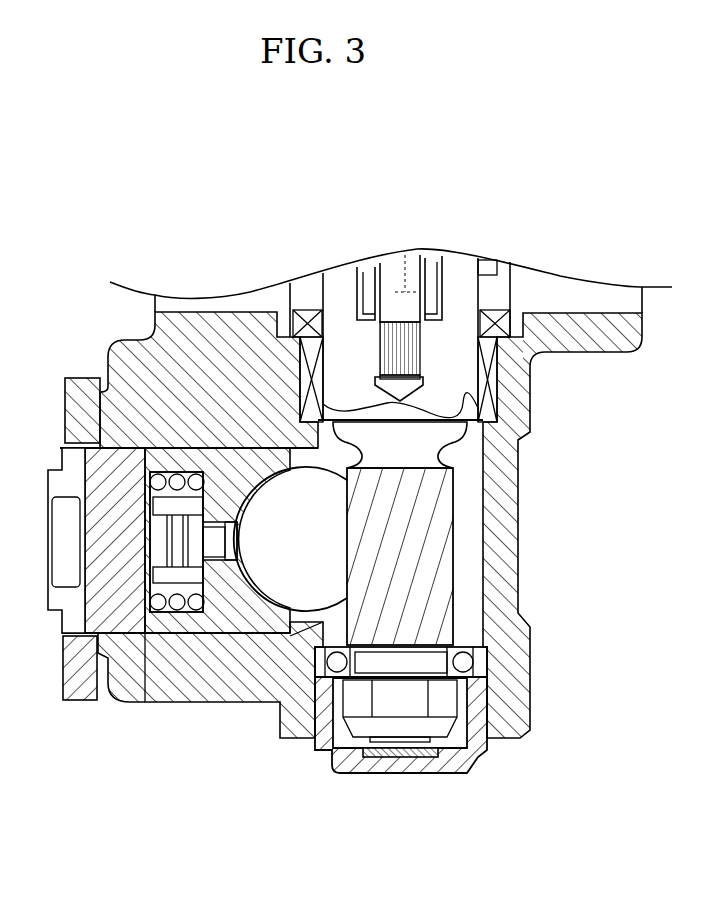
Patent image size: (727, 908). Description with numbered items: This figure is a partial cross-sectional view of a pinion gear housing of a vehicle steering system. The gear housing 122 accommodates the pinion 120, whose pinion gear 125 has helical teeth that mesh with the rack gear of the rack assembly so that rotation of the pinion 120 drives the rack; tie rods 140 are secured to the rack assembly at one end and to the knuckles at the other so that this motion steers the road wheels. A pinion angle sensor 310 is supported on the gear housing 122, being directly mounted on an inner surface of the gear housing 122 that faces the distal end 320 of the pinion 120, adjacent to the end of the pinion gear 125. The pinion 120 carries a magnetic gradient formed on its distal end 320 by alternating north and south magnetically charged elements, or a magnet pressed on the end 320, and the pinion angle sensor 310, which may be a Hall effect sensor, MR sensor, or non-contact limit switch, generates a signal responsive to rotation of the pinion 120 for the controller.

The pinion 120 is at (470, 494).
The gear housing 122 is at (523, 678).
The pinion gear 125 is at (420, 583).
The tie rods 140 is at (322, 556).
The pinion angle sensor 310 is at (443, 755).
The distal end of the pinion 320 is at (433, 739).